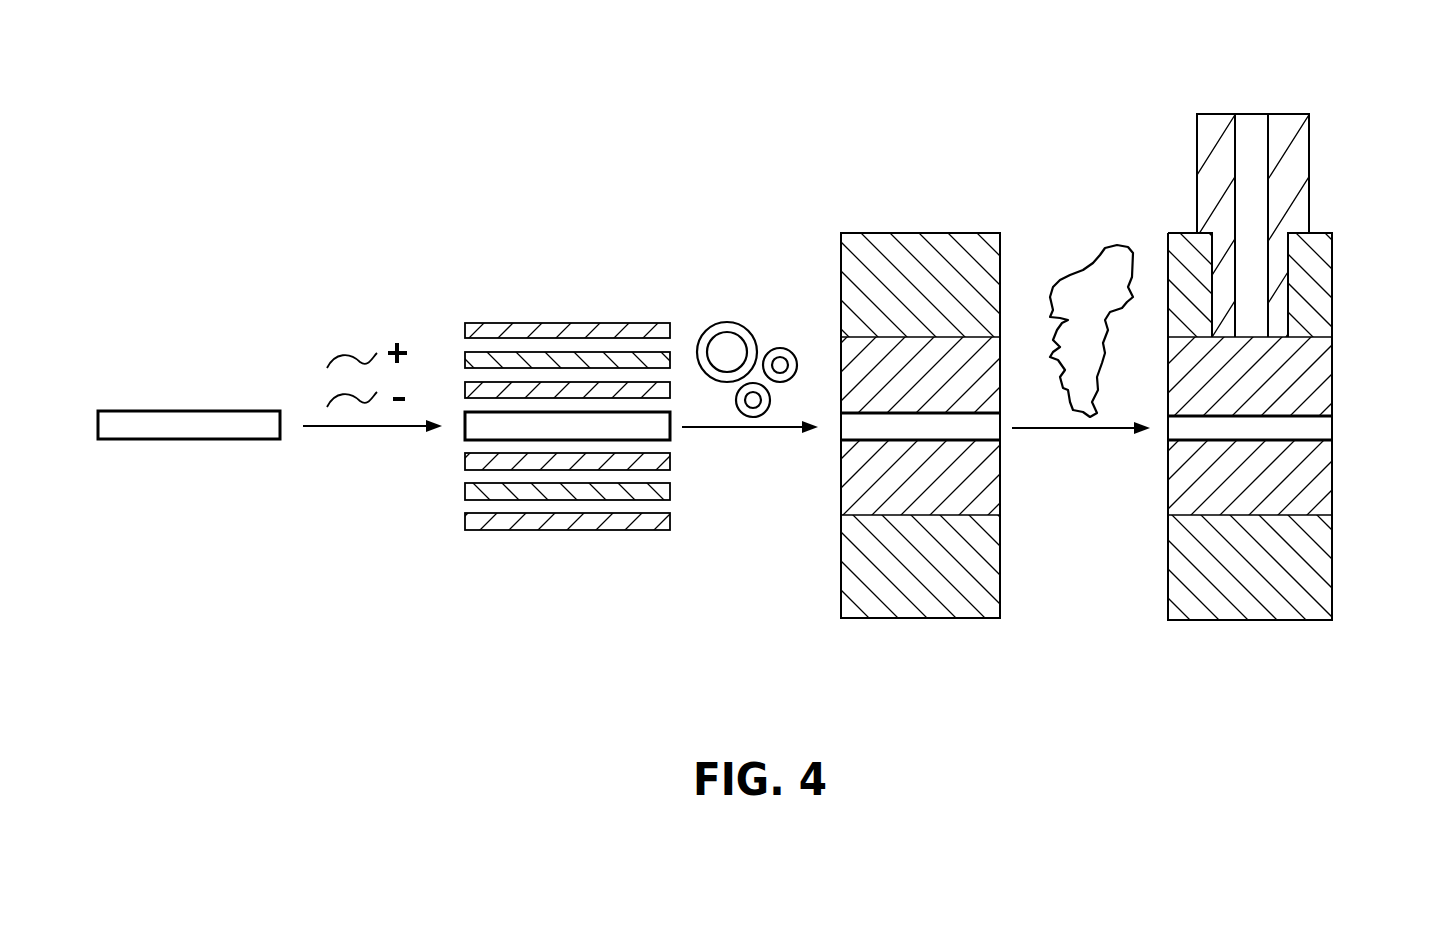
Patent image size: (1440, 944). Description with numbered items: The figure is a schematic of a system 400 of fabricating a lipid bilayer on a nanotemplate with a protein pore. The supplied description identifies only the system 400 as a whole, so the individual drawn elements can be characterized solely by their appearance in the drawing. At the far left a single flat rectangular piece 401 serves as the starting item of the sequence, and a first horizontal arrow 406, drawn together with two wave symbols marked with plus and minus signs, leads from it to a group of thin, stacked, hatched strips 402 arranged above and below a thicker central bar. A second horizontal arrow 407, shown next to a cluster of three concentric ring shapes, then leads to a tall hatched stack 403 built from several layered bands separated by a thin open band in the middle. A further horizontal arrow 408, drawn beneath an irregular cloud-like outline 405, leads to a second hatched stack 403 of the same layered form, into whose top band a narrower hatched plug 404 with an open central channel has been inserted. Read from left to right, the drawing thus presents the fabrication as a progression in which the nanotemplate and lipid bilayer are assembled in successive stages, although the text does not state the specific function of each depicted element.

The system of fabricating a lipid bilayer on a nanotemplate with a protein pore 400 is at (778, 99).
The substrate 401 is at (178, 439).
The electrode layers 402 is at (465, 462).
The stacked assembly 403 is at (935, 620).
The plug 404 is at (1308, 150).
The plasma 405 is at (1073, 273).
The voltage source 406 is at (367, 427).
The particles 407 is at (762, 430).
The process arrow 408 is at (1097, 428).